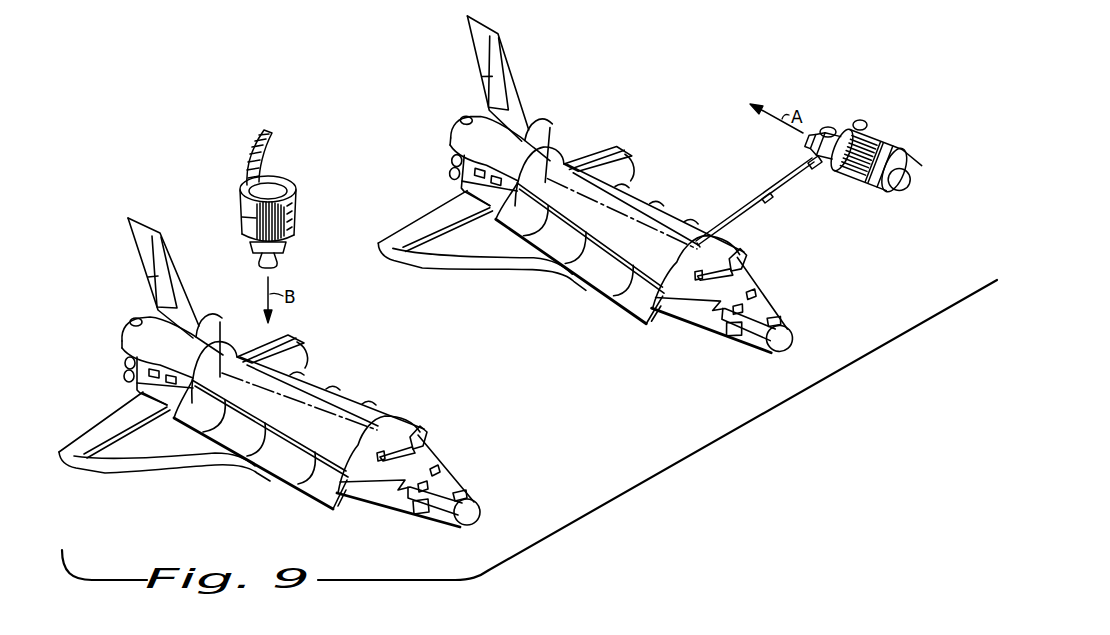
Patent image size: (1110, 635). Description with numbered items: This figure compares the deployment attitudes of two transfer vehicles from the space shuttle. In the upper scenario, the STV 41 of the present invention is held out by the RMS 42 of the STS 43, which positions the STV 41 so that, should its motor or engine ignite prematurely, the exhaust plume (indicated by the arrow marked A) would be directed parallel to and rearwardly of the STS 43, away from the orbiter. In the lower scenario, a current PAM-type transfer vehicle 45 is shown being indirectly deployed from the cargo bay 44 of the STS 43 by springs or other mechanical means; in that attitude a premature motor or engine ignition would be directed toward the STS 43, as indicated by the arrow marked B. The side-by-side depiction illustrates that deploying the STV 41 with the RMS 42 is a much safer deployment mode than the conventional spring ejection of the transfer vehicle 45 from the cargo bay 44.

The STV 41 is at (847, 178).
The RMS 42 is at (766, 200).
The STS 43 is at (397, 502).
The cargo bay 44 is at (345, 423).
The PAM-type transfer vehicle 45 is at (297, 217).